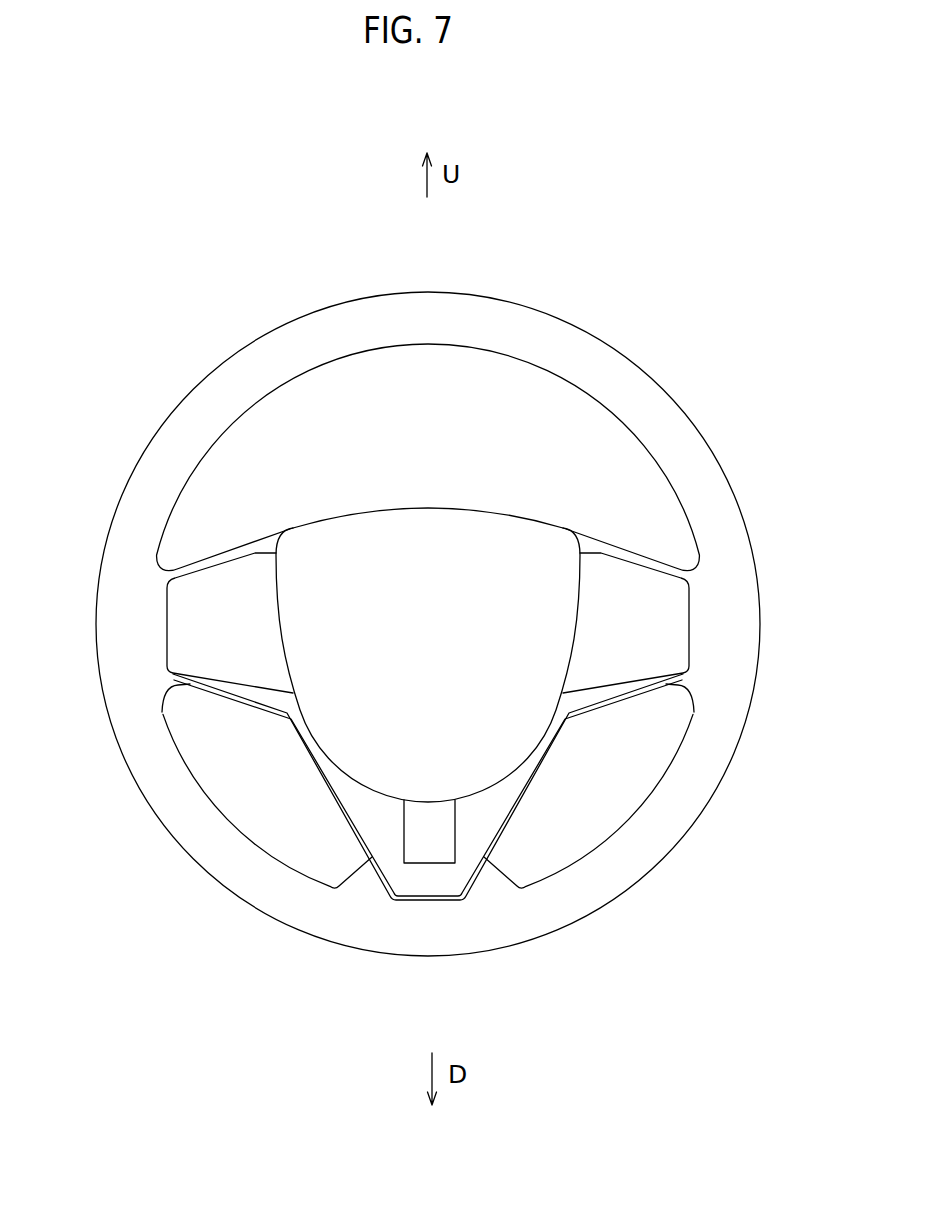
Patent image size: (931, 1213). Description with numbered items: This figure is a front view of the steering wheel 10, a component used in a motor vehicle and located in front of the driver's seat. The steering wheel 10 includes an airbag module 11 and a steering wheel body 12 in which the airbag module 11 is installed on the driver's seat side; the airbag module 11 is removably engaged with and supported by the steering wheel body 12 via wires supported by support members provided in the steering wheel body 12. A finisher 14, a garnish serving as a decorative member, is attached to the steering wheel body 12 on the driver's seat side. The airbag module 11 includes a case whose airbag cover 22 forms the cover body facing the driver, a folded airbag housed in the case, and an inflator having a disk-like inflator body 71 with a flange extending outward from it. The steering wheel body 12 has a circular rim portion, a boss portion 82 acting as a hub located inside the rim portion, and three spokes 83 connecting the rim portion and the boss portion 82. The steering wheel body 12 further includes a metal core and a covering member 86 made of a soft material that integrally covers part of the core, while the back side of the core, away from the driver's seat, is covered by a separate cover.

The steering wheel 10 is at (611, 272).
The airbag module 11 is at (479, 495).
The steering wheel body 12 is at (642, 332).
The finisher 14 is at (618, 558).
The airbag cover 22 is at (390, 525).
The inflator body 71 is at (667, 418).
The boss portion 82 is at (428, 507).
The spokes 83 is at (187, 685).
The covering member 86 is at (642, 371).